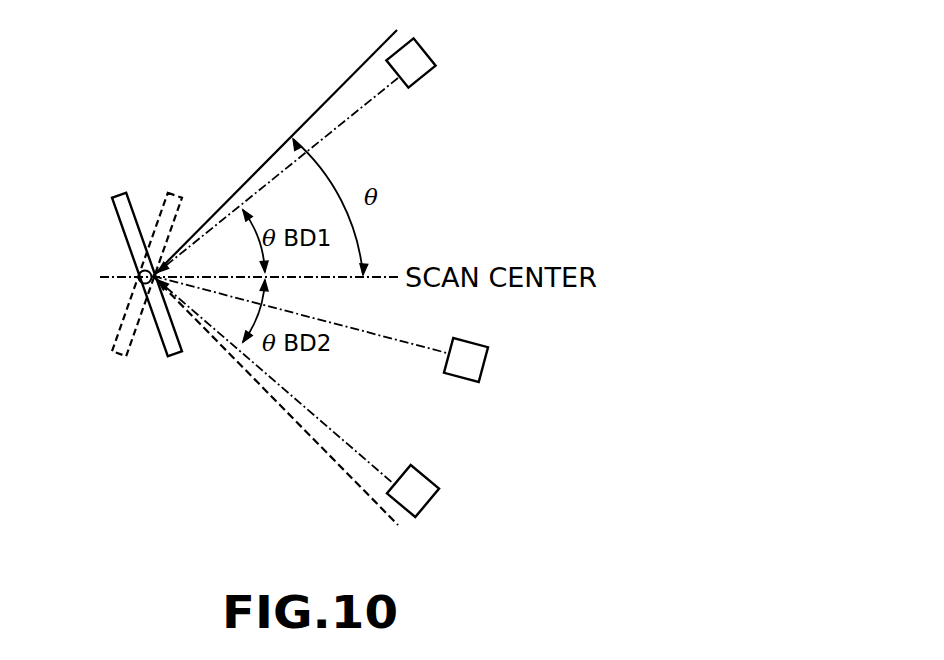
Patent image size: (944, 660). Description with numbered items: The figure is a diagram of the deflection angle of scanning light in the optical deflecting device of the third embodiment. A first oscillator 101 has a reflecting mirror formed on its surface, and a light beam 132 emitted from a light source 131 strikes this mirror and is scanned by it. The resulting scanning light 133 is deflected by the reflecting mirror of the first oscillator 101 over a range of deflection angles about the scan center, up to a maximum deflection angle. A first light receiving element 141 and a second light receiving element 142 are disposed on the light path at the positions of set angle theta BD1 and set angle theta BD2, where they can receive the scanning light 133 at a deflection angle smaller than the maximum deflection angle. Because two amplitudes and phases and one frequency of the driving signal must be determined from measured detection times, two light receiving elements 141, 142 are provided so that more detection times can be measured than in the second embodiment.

The first oscillator 101 is at (116, 196).
The light source 131 is at (477, 339).
The light beam 132 is at (397, 341).
The scanning light 133 is at (278, 136).
The first light receiving element 141 is at (430, 47).
The second light receiving element 142 is at (438, 482).